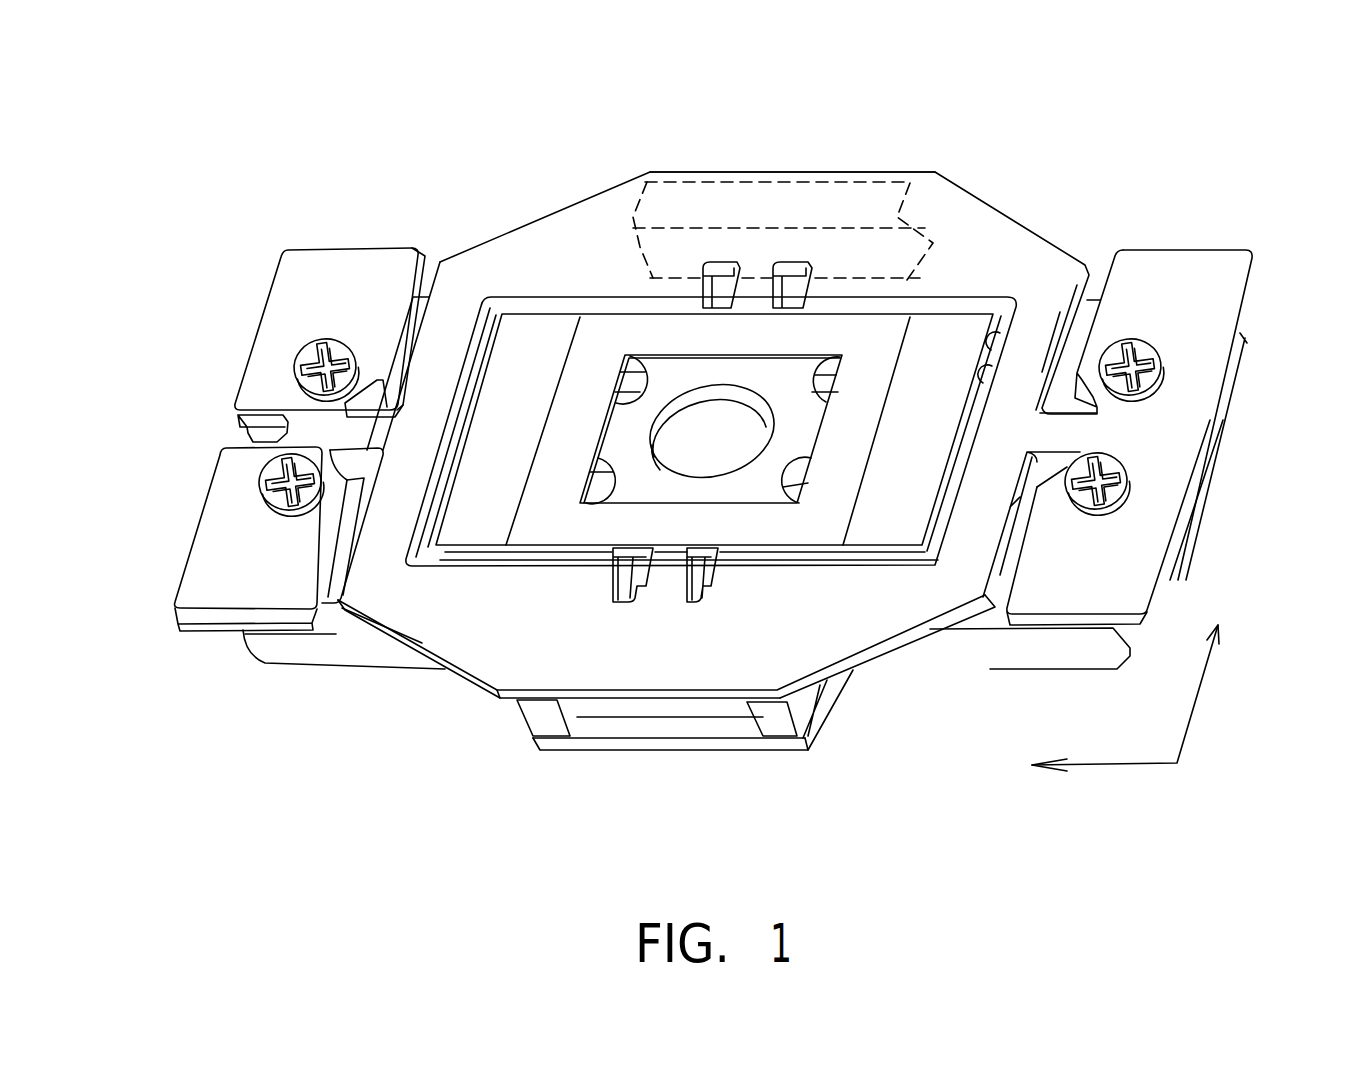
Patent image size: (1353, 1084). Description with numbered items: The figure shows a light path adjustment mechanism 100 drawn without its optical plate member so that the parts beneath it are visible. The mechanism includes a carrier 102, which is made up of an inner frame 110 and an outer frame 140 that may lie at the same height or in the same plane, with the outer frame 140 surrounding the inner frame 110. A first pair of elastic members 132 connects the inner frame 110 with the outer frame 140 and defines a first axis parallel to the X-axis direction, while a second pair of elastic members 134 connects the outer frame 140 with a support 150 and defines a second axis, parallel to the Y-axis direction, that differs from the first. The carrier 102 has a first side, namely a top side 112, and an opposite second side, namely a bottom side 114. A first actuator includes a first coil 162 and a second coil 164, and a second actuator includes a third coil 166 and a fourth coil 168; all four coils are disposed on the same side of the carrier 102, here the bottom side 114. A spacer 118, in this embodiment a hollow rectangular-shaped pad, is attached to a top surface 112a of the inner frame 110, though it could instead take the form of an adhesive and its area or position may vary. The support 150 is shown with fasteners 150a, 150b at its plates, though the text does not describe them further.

The light path adjustment mechanism 100 is at (133, 69).
The carrier 102 is at (308, 750).
The inner frame 110 is at (363, 620).
The top side 112 is at (580, 223).
The top surface 112a is at (537, 325).
The bottom side 114 is at (437, 550).
The spacer 118 is at (907, 350).
The first pair of elastic members 132 is at (758, 285).
The second pair of elastic members 134 is at (357, 435).
The outer frame 140 is at (268, 662).
The support 150 is at (350, 248).
The screw of clamp plate 150a is at (317, 350).
The screw of clamp plate 150b is at (1140, 347).
The first coil 162 is at (473, 562).
The second coil 164 is at (890, 560).
The third coil 166 is at (702, 710).
The fourth coil 168 is at (817, 183).